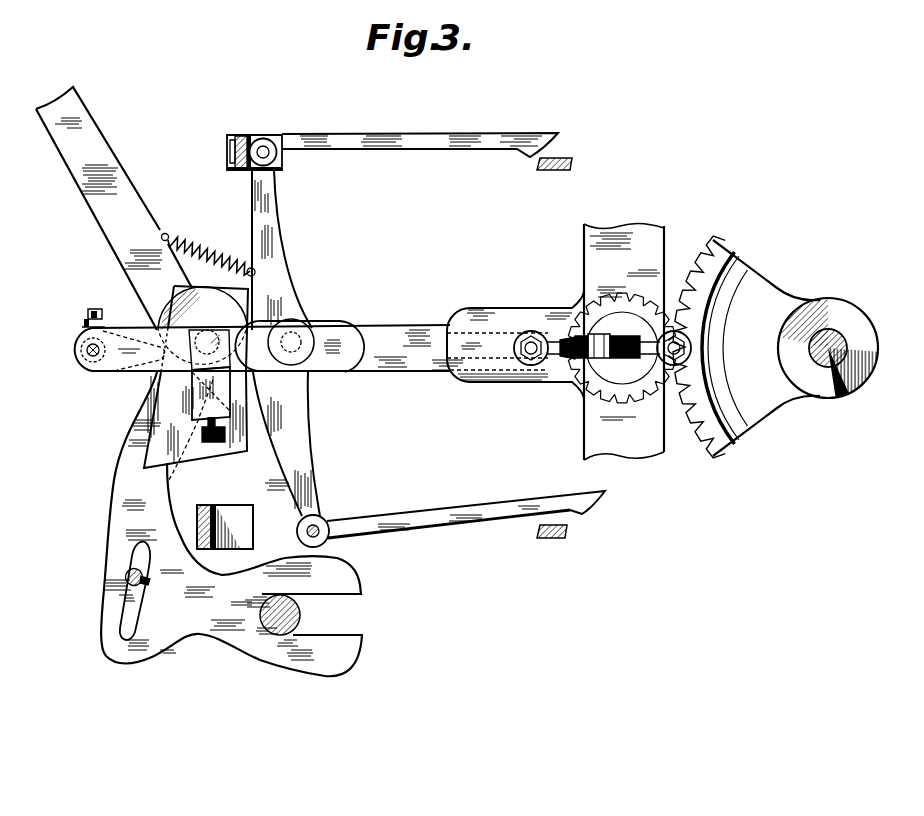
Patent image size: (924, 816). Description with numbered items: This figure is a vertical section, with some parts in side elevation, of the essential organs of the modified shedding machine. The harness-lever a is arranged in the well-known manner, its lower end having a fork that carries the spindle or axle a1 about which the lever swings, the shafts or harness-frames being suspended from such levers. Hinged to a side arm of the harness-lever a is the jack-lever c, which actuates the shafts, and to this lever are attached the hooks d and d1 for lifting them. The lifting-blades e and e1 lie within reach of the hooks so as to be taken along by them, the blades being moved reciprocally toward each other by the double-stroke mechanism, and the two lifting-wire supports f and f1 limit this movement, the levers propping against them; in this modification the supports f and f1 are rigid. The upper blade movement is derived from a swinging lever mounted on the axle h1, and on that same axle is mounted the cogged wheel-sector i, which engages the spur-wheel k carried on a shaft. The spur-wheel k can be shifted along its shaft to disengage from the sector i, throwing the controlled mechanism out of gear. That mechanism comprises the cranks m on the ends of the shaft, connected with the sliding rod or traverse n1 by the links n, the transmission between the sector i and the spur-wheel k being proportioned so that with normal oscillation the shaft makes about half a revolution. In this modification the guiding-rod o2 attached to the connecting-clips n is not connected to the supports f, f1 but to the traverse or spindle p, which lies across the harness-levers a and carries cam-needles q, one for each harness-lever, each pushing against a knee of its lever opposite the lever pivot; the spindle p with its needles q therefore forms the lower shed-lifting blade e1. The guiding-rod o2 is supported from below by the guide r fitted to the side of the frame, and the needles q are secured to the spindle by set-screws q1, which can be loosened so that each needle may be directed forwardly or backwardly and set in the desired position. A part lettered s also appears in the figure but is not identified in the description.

The harness-lever a is at (114, 208).
The spindle or axle a1 is at (300, 615).
The jack-lever c is at (257, 210).
The hook d is at (533, 147).
The hook d1 is at (597, 507).
The lifting-blade e is at (545, 172).
The lifting-blade e1 is at (547, 539).
The lifting-wire support f is at (243, 133).
The lifting-wire support f1 is at (242, 517).
The axle h1 is at (837, 347).
The cogged wheel-sector i is at (746, 347).
The spur-wheel k is at (671, 315).
The crank m is at (573, 360).
The link n is at (660, 313).
The sliding rod or traverse n1 is at (531, 354).
The guiding-rod o2 is at (392, 333).
The traverse or spindle p is at (88, 355).
The cam-needle q is at (143, 352).
The set-screw q1 is at (88, 310).
The guide r is at (197, 414).
The spring s is at (200, 254).